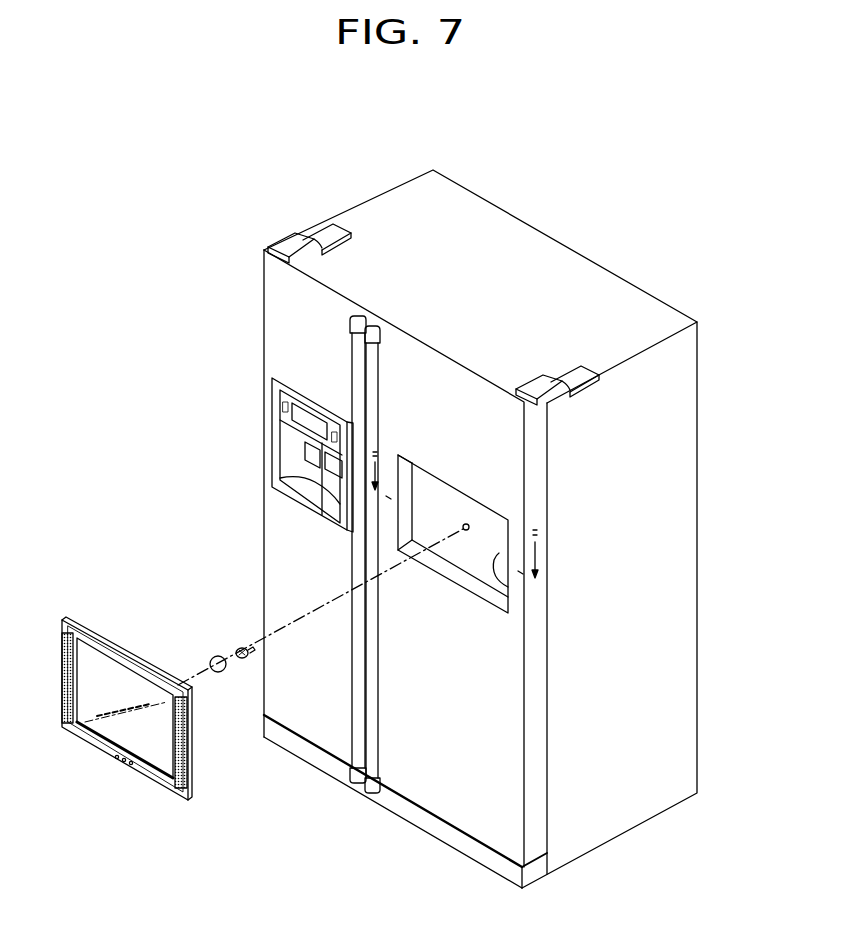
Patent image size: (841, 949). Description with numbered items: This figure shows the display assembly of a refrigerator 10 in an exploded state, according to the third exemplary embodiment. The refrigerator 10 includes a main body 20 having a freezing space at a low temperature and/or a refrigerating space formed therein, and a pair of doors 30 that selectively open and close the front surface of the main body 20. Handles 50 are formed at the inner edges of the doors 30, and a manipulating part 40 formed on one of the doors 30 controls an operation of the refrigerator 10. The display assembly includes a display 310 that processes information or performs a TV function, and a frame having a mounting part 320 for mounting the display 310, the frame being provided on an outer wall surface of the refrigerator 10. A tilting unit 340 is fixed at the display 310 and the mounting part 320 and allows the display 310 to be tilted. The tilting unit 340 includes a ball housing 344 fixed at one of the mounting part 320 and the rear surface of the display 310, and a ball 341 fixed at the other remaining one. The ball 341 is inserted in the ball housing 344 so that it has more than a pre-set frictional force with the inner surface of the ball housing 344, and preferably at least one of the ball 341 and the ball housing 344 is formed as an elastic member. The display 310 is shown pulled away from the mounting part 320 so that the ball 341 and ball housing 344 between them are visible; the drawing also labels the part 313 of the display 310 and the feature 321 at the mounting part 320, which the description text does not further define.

The refrigerator 10 is at (606, 224).
The main body 20 is at (687, 452).
The doors 30 is at (272, 543).
The manipulating part 40 is at (285, 410).
The handles 50 is at (360, 360).
The display 310 is at (110, 733).
The speaker grille 313 is at (190, 762).
The mounting part 320 is at (469, 530).
The hook 321 is at (508, 587).
The tilting unit 340 is at (207, 622).
The ball 341 is at (211, 659).
The ball housing 344 is at (241, 645).